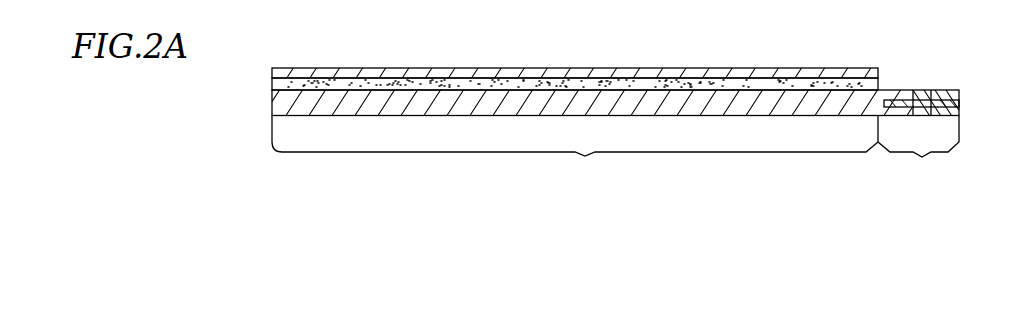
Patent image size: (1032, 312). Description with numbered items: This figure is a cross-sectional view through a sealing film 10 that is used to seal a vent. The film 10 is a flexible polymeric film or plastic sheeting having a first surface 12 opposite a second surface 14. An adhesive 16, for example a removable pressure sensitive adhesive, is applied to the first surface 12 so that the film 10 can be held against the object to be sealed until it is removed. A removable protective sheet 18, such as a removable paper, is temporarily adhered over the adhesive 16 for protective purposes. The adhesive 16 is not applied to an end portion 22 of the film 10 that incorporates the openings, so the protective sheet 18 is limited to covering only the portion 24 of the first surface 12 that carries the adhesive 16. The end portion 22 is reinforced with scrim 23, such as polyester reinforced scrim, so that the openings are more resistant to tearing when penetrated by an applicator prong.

The sealing film 10 is at (272, 97).
The first surface 12 is at (837, 90).
The second surface 14 is at (410, 116).
The adhesive 16 is at (748, 86).
The removable protective sheet 18 is at (631, 72).
The end portion 22 is at (922, 157).
The scrim 23 is at (960, 103).
The portion incorporating the adhesive 24 is at (585, 156).